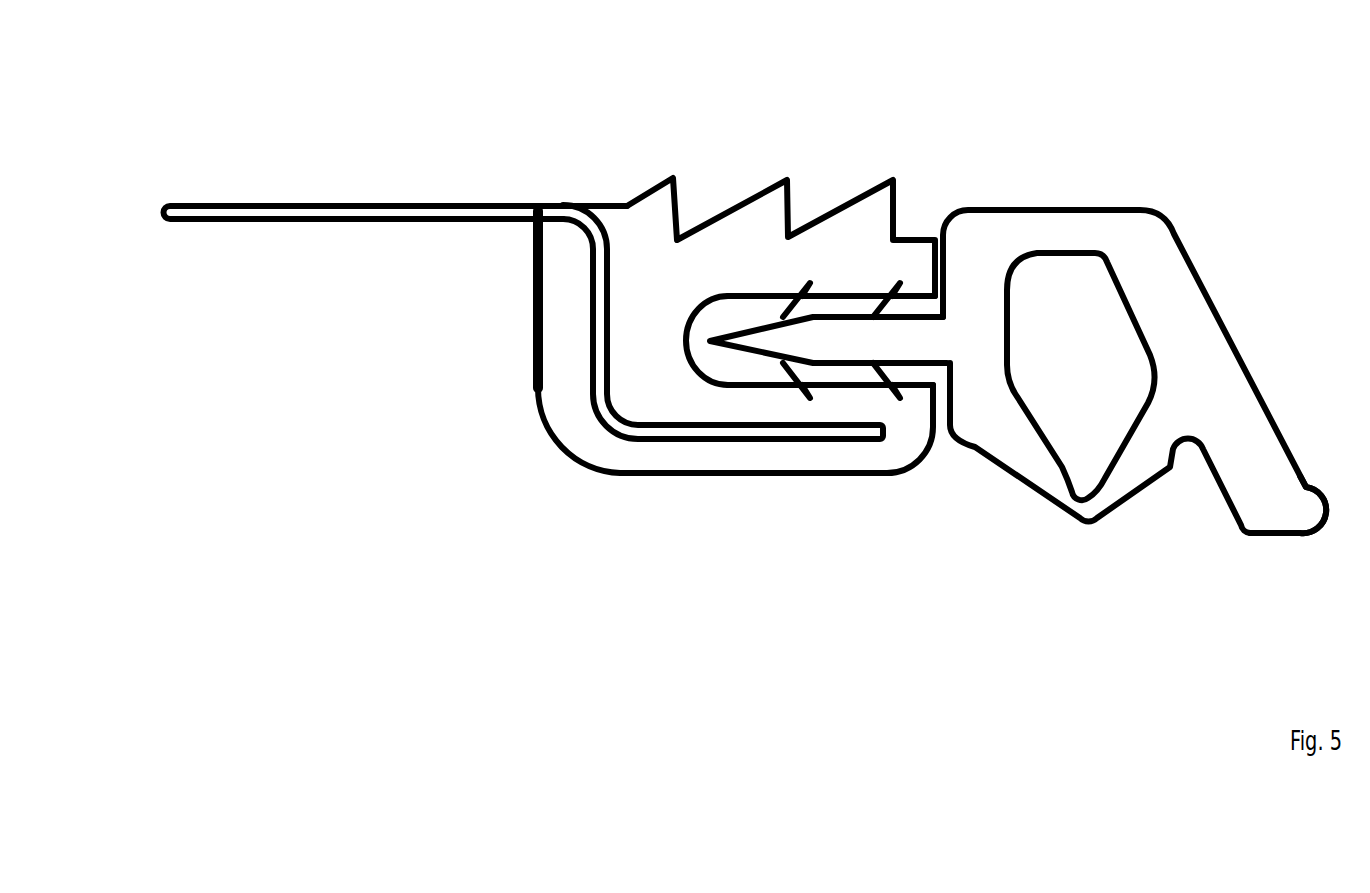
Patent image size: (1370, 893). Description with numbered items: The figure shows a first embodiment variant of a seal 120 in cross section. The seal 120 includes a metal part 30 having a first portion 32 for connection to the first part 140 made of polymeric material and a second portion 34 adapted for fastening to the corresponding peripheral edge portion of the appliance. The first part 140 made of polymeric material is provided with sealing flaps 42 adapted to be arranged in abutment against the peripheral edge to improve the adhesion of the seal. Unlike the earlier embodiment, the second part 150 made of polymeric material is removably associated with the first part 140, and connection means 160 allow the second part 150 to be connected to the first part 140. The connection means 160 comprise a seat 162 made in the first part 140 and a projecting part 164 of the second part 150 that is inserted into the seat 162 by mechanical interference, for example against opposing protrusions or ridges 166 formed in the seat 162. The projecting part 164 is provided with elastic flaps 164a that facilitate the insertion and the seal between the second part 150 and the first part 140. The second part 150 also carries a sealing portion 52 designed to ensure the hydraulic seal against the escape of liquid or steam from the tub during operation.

The metal part 30 is at (550, 267).
The first portion 32 is at (588, 411).
The second portion 34 is at (356, 213).
The sealing flaps 42 is at (875, 210).
The sealing portion 52 is at (1277, 567).
The seal 120 is at (576, 447).
The first part made of polymeric material 140 is at (610, 553).
The second part made of polymeric material 150 is at (1134, 454).
The connection means 160 is at (873, 406).
The seat 162 is at (722, 390).
The projecting part 164 is at (820, 345).
The elastic flaps 164a is at (782, 390).
The opposing protrusions or ridges 166 is at (818, 298).